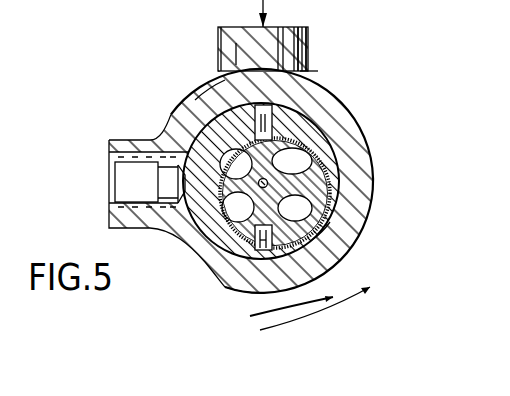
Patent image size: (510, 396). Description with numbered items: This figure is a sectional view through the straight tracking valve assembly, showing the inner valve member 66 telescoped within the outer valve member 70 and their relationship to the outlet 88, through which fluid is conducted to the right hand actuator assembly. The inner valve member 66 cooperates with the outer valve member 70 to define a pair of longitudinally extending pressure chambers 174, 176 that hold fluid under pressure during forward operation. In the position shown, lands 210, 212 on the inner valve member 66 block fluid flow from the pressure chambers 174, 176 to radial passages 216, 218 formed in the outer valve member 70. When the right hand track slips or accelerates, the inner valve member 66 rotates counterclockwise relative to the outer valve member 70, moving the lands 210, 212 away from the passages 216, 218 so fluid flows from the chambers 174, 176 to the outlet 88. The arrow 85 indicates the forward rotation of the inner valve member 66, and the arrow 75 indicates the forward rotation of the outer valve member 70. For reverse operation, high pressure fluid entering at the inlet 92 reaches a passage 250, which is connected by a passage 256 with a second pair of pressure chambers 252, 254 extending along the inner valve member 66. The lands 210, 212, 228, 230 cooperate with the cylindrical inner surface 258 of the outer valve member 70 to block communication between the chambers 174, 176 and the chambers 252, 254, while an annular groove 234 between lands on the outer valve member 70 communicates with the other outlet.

The outer valve member 70 is at (340, 112).
The land 210 is at (350, 248).
The inner valve member 66 is at (322, 122).
The cylindrical inner surface 258 is at (343, 233).
The passage 250 is at (330, 162).
The land 230 is at (332, 183).
The pressure chamber 254 is at (327, 212).
The pressure chamber 176 is at (300, 150).
The inlet 92 is at (302, 27).
The radial passage 218 is at (307, 58).
The land 212 is at (313, 83).
The annular groove 234 is at (210, 100).
The pressure chamber 252 is at (182, 108).
The land 228 is at (168, 229).
The pressure chamber 174 is at (197, 268).
The radial passage 216 is at (235, 291).
The passage 256 is at (108, 152).
The outlet 88 is at (125, 185).
The arrow 85 is at (250, 316).
The arrow 75 is at (280, 330).